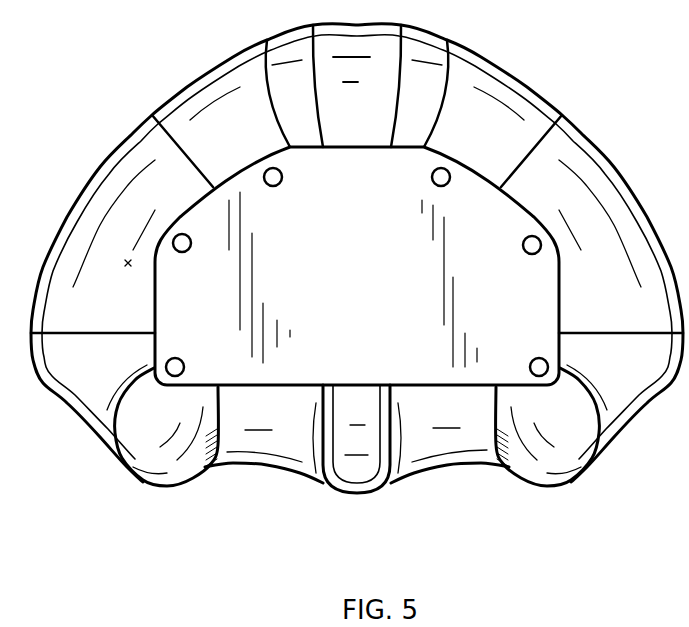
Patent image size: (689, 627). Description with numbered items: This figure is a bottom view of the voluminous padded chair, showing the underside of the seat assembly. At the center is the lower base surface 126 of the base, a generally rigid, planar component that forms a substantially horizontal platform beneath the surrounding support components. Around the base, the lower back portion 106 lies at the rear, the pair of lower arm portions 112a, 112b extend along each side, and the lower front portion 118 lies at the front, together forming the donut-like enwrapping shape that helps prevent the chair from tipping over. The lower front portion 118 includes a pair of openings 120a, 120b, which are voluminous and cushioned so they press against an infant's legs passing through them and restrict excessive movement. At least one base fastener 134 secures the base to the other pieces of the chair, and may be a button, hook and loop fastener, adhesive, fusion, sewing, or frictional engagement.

The lower back portion 106 is at (382, 122).
The lower arm portion 112a is at (68, 316).
The lower arm portion 112b is at (633, 316).
The lower front portion 118 is at (338, 415).
The opening 120a is at (259, 503).
The opening 120b is at (455, 504).
The lower base surface 126 is at (377, 279).
The base fastener 134 is at (566, 330).